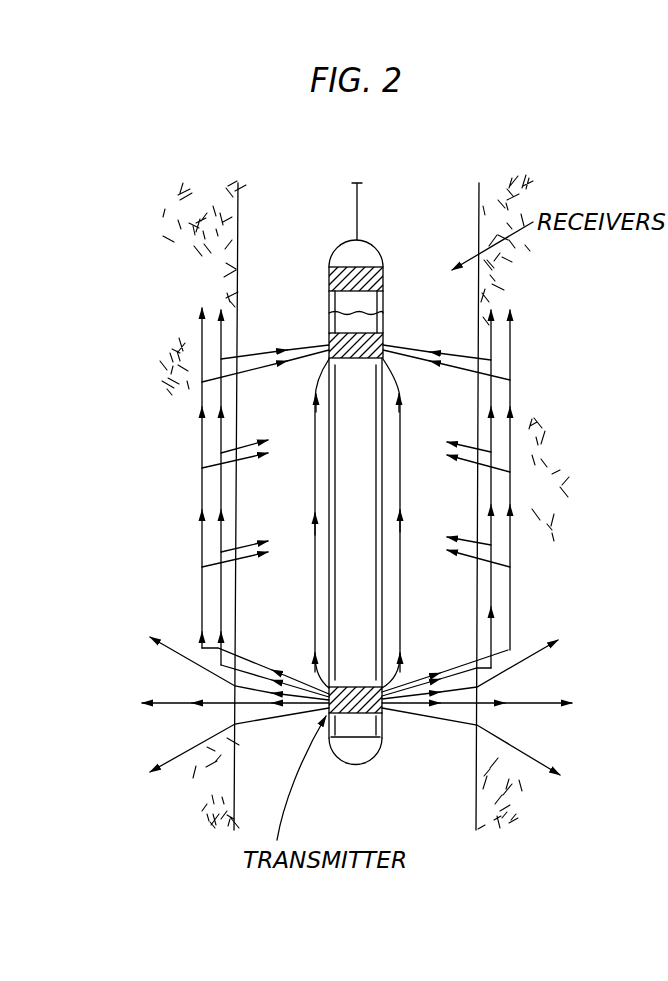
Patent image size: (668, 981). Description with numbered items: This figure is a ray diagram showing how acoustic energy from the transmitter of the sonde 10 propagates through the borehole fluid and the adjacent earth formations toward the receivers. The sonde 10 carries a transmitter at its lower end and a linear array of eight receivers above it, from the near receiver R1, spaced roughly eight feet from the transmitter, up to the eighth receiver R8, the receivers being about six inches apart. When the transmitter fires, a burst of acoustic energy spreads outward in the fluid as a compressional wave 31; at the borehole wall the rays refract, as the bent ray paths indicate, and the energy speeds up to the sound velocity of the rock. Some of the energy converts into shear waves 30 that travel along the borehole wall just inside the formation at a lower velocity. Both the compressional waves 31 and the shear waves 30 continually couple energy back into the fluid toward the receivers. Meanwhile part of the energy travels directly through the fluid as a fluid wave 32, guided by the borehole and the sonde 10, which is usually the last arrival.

The sonde 10 is at (381, 474).
The near receiver R1 is at (386, 333).
The eighth receiver R8 is at (386, 268).
The shear waves 30 is at (491, 360).
The compressional waves 31 is at (491, 393).
The fluid wave 32 is at (400, 488).